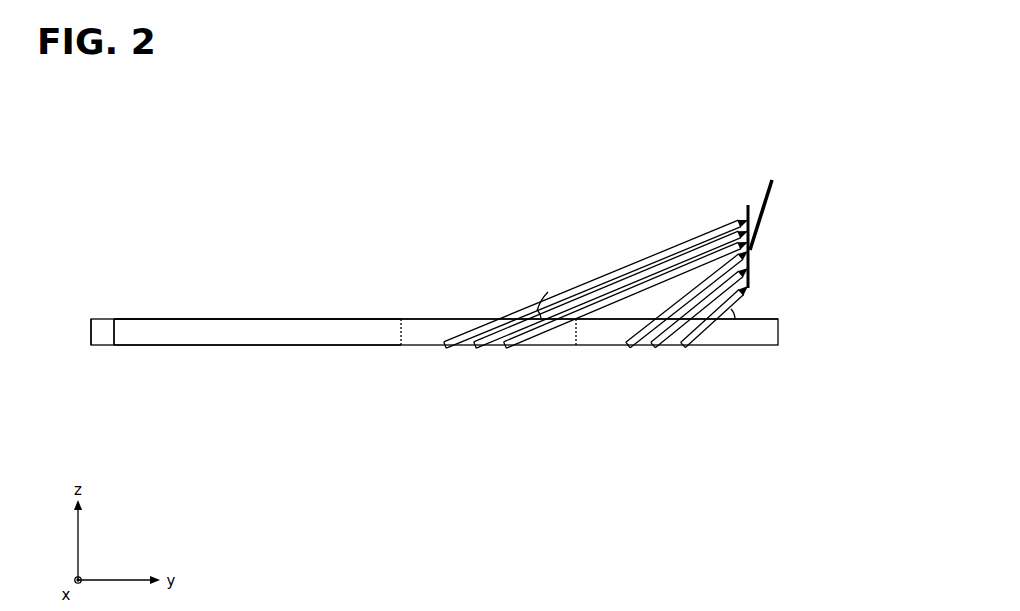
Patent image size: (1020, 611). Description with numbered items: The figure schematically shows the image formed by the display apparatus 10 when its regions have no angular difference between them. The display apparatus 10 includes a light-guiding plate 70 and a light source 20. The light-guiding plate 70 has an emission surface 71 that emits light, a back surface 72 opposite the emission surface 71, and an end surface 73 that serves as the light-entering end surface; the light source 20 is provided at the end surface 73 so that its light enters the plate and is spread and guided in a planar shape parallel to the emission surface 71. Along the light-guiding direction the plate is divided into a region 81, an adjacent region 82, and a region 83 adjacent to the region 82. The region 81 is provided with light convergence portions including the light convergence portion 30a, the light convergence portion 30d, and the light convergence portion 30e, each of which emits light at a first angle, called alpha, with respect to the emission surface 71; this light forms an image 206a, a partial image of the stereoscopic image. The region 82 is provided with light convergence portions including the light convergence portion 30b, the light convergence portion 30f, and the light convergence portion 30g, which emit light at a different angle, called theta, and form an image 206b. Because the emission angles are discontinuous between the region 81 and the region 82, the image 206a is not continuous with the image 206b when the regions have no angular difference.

The display apparatus 10 is at (671, 83).
The light source 20 is at (98, 346).
The light-guiding plate 70 is at (200, 318).
The emission surface 71 is at (262, 318).
The back surface 72 is at (258, 346).
The end surface 73 is at (119, 330).
The region 81 is at (756, 362).
The region 82 is at (460, 310).
The region 83 is at (350, 310).
The light convergence portion 30a is at (683, 356).
The light convergence portion 30b is at (447, 356).
The light convergence portion 30d is at (653, 356).
The light convergence portion 30e is at (628, 356).
The light convergence portion 30f is at (473, 356).
The light convergence portion 30g is at (503, 356).
The image 206a is at (745, 207).
The image 206b is at (770, 182).